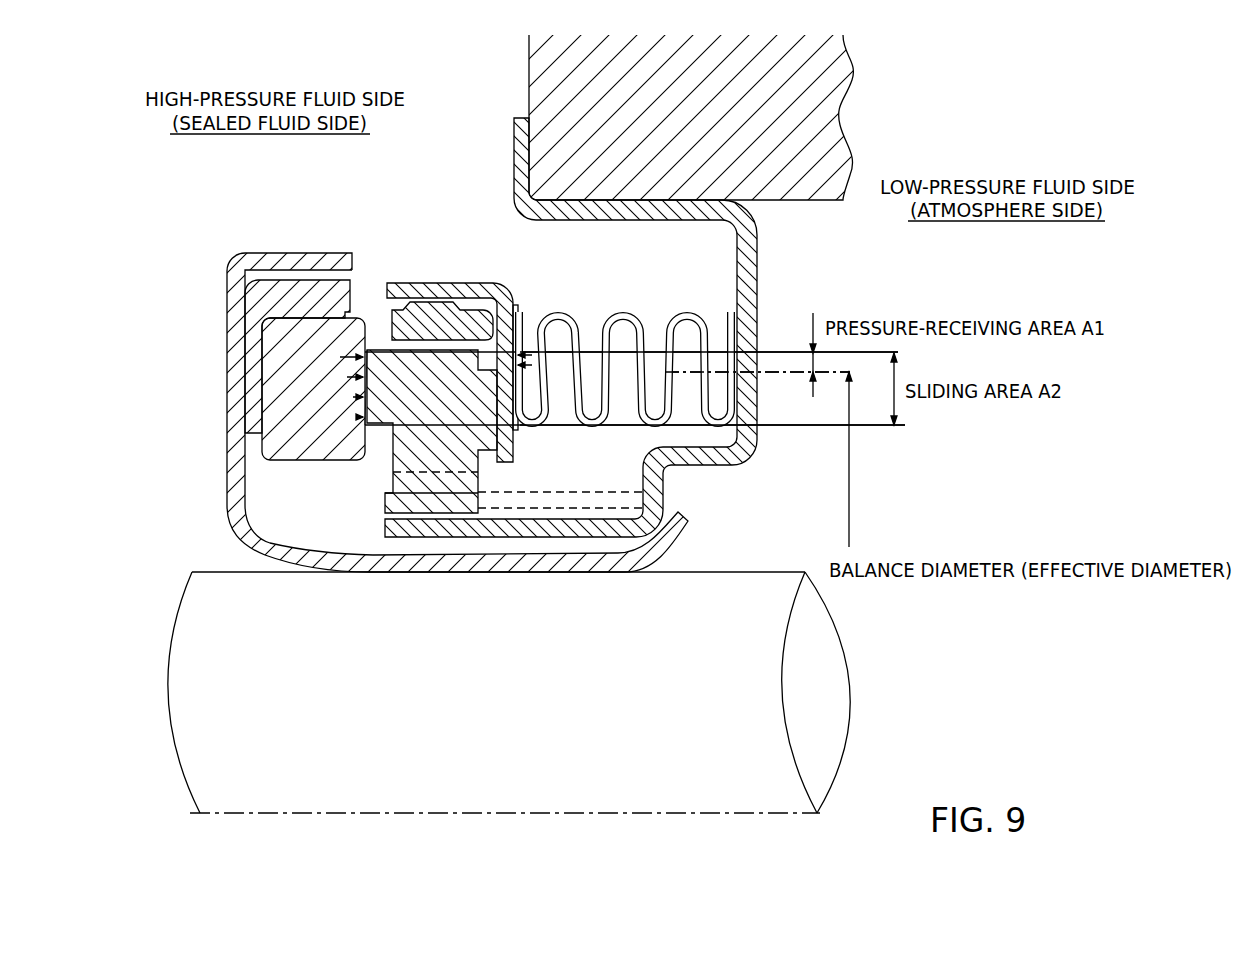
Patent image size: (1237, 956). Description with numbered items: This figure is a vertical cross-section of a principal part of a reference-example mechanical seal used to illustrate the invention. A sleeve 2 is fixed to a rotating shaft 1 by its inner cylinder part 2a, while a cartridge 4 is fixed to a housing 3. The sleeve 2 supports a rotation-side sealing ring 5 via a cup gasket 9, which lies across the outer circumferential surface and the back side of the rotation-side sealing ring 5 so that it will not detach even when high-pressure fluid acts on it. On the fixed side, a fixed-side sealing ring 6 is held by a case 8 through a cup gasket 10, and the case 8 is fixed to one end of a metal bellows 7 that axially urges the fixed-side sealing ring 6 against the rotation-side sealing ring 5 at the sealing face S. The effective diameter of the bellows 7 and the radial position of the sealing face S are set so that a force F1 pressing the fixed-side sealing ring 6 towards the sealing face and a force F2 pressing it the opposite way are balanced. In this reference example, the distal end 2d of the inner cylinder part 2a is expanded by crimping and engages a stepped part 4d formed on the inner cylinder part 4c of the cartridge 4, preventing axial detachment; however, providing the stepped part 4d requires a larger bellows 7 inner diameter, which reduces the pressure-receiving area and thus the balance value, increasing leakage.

The rotating shaft 1 is at (488, 770).
The sleeve 2 is at (227, 290).
The inner cylinder part 2a is at (497, 558).
The distal end 2d is at (677, 535).
The housing 3 is at (562, 92).
The cartridge 4 is at (757, 248).
The inner cylinder part 4c is at (578, 538).
The stepped part 4d is at (657, 488).
The rotation-side sealing ring 5 is at (322, 330).
The fixed-side sealing ring 6 is at (387, 357).
The bellows 7 is at (623, 312).
The case 8 is at (470, 283).
The cup gasket 9 is at (282, 295).
The cup gasket 10 is at (512, 300).
The sealing face S is at (367, 422).
The force pressing the fixed-side sealing ring towards the sealing face F1 is at (522, 318).
The force pressing the fixed-side sealing ring towards the side opposite the sealing F2 is at (339, 387).